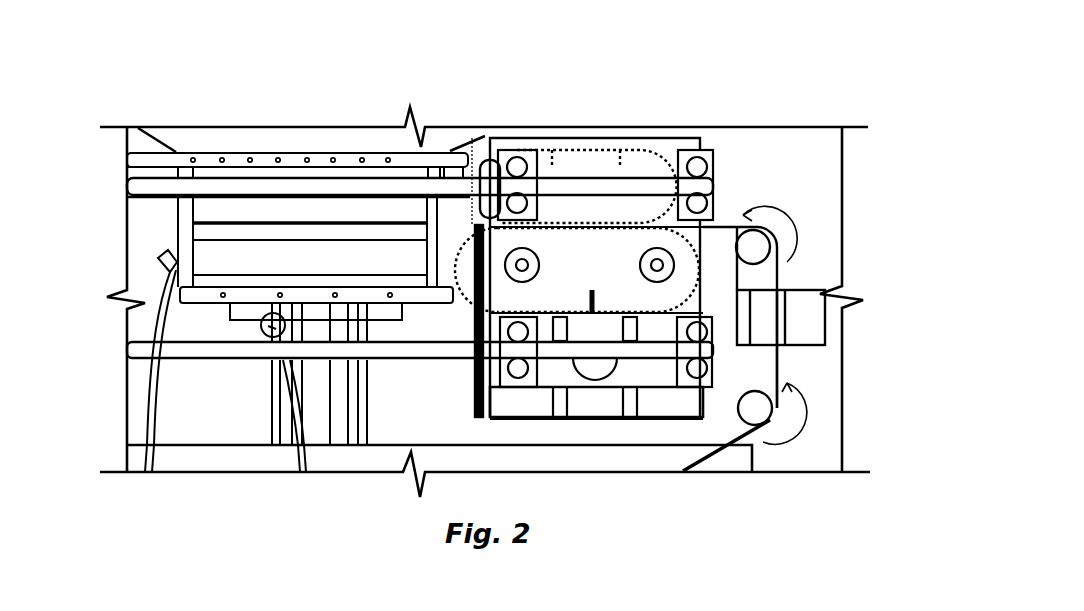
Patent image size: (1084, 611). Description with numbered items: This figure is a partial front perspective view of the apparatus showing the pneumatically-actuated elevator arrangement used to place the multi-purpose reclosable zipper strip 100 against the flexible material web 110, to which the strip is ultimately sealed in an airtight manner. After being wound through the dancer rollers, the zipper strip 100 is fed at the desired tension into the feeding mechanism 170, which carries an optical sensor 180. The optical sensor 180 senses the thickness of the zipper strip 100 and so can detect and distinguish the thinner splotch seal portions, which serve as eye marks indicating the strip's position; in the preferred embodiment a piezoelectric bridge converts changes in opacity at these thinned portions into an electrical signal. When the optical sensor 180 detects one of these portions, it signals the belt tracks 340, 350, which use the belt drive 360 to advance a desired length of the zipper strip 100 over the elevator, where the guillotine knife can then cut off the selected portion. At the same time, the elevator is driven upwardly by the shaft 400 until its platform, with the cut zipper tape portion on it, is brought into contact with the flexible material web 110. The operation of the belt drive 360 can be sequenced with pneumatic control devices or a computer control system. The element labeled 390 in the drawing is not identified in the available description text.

The multi-purpose reclosable zipper strip 100 is at (777, 357).
The flexible material web 110 is at (282, 150).
The feeding mechanism 170 is at (732, 190).
The optical sensor 180 is at (807, 300).
The belt track 340 is at (553, 230).
The belt track 350 is at (637, 223).
The belt drive 360 is at (637, 283).
The carriage 390 is at (332, 223).
The shaft 400 is at (317, 410).